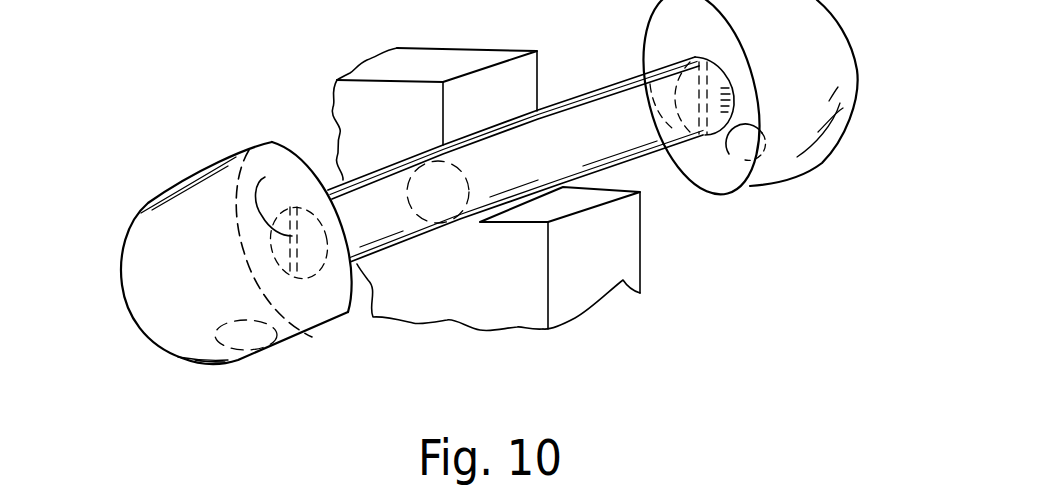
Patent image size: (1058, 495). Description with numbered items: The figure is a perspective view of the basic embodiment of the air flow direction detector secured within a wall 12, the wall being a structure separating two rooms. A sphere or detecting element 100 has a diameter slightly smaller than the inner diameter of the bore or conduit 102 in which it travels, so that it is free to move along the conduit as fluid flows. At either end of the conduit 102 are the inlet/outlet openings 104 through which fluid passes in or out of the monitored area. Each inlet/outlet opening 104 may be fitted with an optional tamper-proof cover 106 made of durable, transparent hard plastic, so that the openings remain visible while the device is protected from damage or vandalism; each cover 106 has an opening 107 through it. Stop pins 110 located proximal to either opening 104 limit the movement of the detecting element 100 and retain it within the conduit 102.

The wall 12 is at (623, 280).
The sphere or detecting element 100 is at (420, 220).
The bore or conduit 102 is at (618, 86).
The inlet/outlet opening 104 is at (278, 237).
The tamper-proof cover 106 is at (143, 343).
The opening 107 is at (257, 350).
The stop pin 110 is at (299, 224).